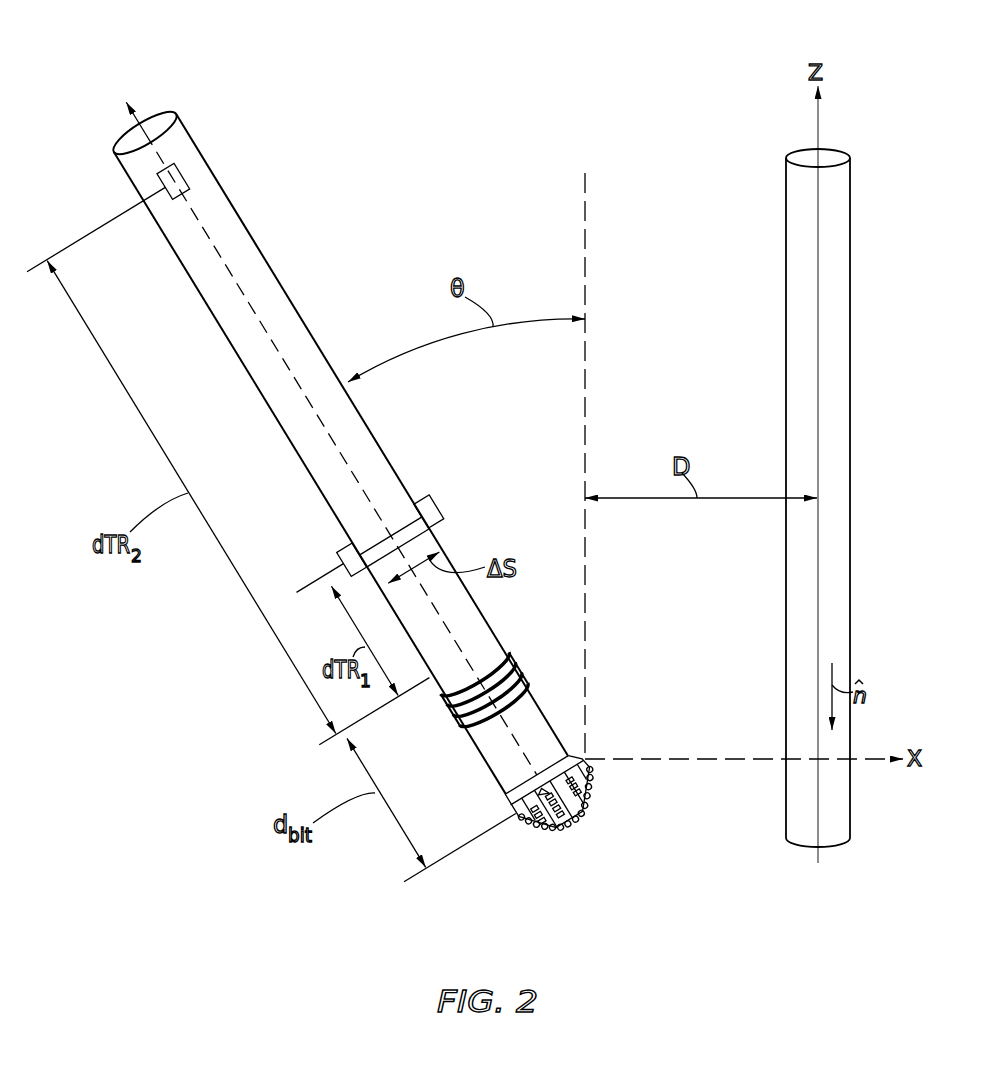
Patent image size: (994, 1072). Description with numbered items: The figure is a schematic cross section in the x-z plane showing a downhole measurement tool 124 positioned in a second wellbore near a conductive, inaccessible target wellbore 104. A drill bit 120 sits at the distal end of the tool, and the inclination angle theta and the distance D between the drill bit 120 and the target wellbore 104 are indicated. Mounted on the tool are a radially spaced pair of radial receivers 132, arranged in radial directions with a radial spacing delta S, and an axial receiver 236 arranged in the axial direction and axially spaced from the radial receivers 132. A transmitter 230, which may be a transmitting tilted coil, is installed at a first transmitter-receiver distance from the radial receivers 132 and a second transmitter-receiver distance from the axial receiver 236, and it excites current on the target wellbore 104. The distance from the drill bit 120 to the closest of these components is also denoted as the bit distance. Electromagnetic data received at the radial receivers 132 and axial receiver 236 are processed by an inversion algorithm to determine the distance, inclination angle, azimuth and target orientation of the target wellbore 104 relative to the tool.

The target wellbore 104 is at (785, 207).
The drill bit 120 is at (595, 793).
The downhole measurement tool 124 is at (248, 230).
The radial receivers 132 is at (436, 496).
The transmitter 230 is at (517, 663).
The axial receiver 236 is at (185, 180).